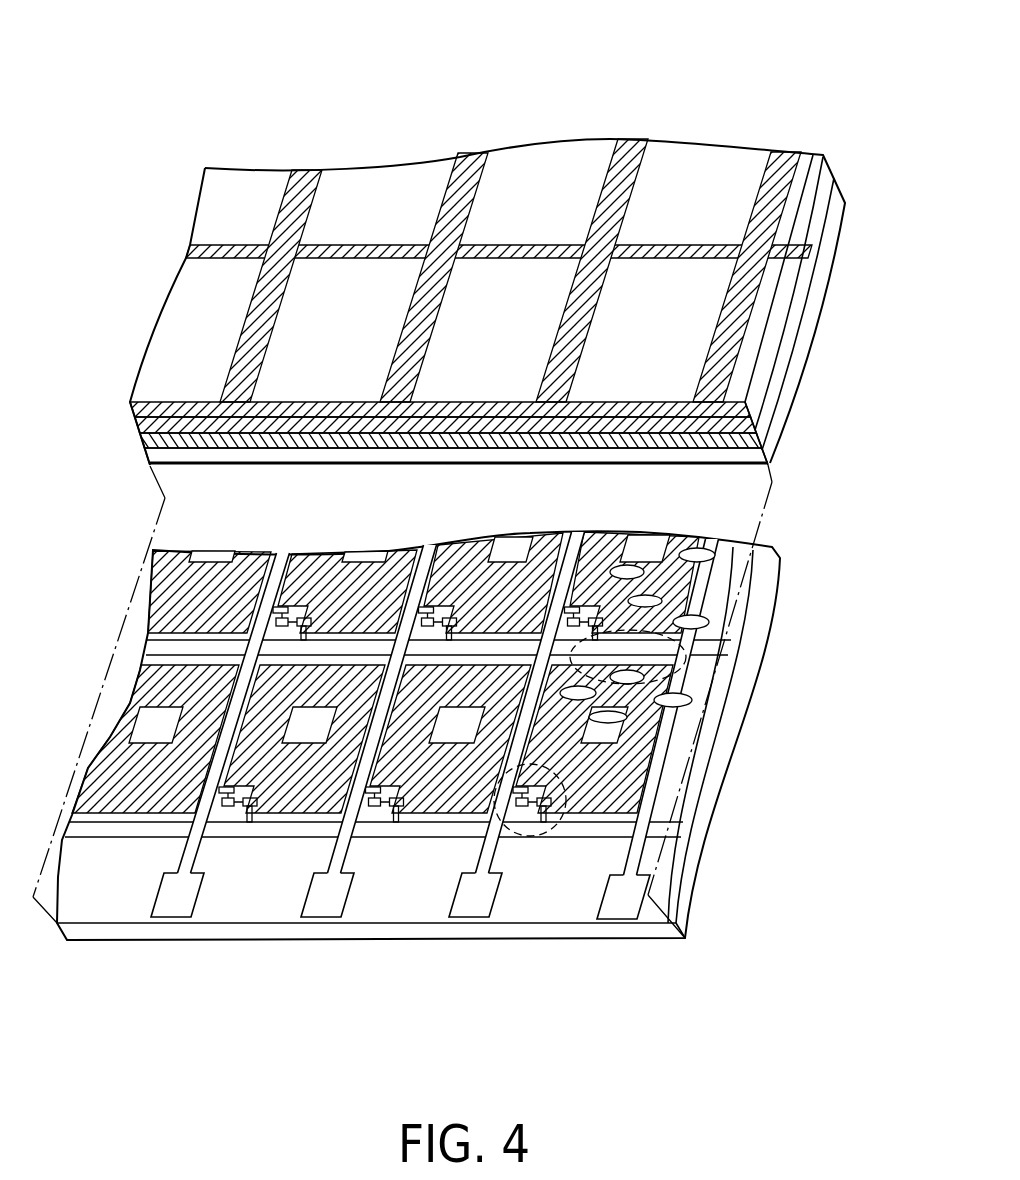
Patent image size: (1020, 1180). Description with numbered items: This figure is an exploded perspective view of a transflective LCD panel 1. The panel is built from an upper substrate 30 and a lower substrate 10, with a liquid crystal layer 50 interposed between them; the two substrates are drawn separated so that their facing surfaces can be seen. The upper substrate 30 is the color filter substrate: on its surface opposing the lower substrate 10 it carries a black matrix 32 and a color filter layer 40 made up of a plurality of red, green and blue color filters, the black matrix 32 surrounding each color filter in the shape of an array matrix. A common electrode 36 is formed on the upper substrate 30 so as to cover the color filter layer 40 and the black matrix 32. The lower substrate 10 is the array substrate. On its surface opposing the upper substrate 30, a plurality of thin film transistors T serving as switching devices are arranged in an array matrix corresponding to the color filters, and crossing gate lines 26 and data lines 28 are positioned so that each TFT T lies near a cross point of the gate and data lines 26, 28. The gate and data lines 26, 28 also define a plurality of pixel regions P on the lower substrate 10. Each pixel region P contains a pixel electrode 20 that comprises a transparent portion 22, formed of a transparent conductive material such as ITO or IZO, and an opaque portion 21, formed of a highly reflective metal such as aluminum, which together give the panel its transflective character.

The transflective LCD panel 1 is at (118, 42).
The lower substrate 10 is at (303, 928).
The pixel electrode 20 is at (119, 815).
The opaque portion 21 is at (634, 790).
The transparent portion 22 is at (690, 708).
The gate line 26 is at (673, 831).
The data line 28 is at (469, 862).
The upper substrate 30 is at (131, 425).
The black matrix 32 is at (132, 442).
The common electrode 36 is at (771, 462).
The color filter layer 40 is at (703, 306).
The liquid crystal layer 50 is at (706, 619).
The pixel region P is at (690, 658).
The TFT T is at (538, 838).